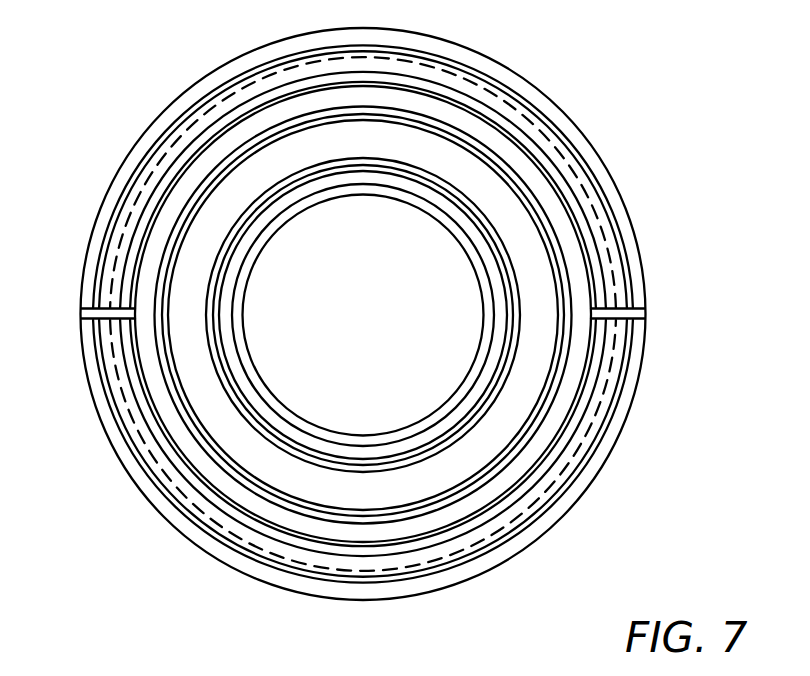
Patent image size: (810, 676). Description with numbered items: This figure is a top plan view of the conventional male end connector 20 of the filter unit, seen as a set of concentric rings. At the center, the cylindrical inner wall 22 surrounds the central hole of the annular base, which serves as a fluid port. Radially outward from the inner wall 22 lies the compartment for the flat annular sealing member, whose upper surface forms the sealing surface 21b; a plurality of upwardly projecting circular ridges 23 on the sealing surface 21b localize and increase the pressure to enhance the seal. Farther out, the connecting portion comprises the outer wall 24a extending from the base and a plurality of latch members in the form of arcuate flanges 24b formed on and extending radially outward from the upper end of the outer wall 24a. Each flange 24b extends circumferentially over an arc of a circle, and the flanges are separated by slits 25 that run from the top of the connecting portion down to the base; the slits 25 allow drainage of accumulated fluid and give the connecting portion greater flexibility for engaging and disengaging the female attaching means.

The male end connector 20 is at (597, 142).
The sealing surface 21b is at (203, 248).
The cylindrical inner wall 22 is at (297, 207).
The circular ridges 23 is at (200, 188).
The outer wall 24a is at (589, 383).
The arcuate flanges 24b is at (588, 462).
The slits 25 is at (622, 316).